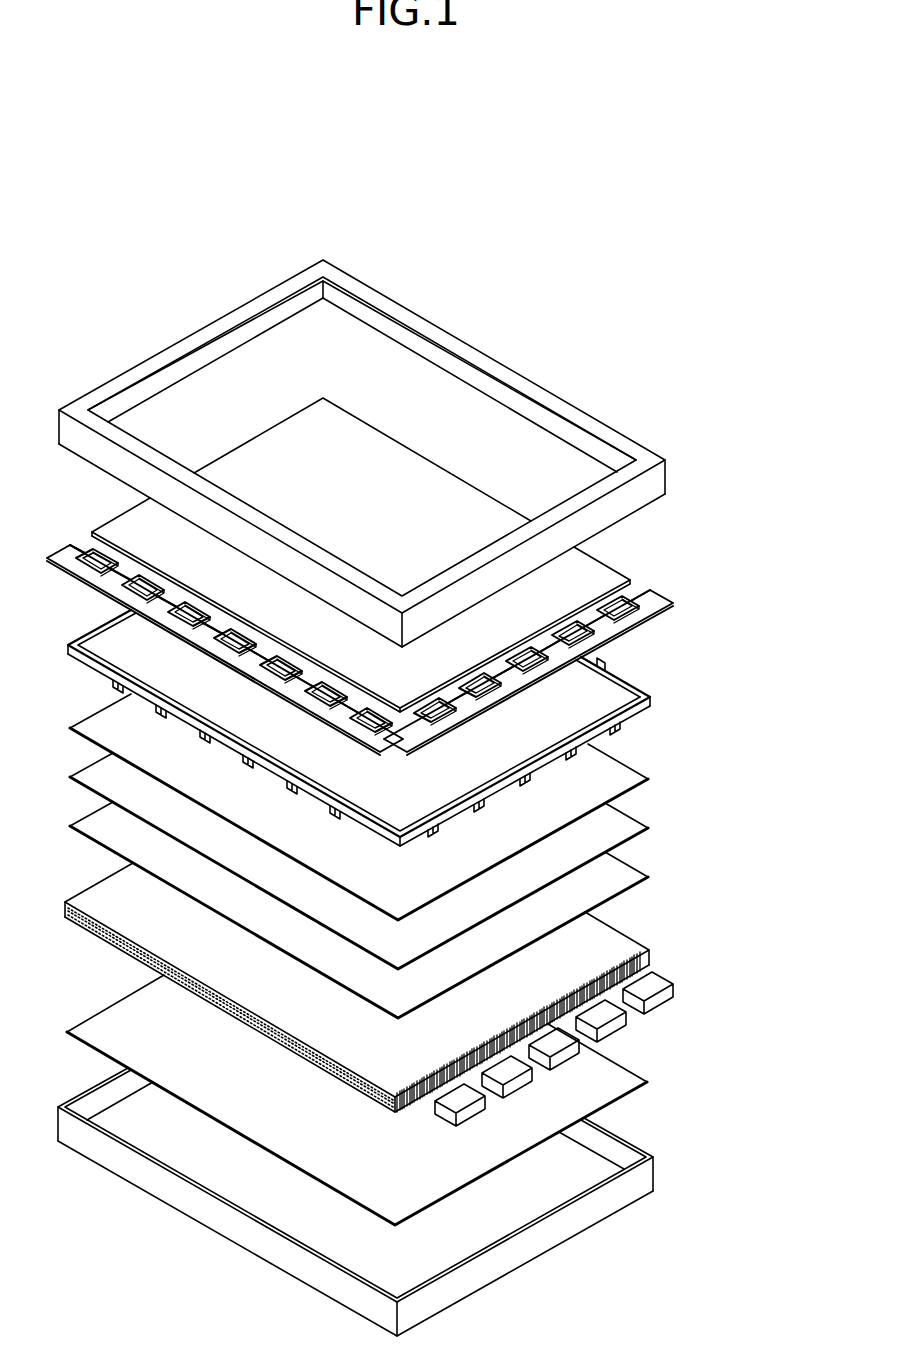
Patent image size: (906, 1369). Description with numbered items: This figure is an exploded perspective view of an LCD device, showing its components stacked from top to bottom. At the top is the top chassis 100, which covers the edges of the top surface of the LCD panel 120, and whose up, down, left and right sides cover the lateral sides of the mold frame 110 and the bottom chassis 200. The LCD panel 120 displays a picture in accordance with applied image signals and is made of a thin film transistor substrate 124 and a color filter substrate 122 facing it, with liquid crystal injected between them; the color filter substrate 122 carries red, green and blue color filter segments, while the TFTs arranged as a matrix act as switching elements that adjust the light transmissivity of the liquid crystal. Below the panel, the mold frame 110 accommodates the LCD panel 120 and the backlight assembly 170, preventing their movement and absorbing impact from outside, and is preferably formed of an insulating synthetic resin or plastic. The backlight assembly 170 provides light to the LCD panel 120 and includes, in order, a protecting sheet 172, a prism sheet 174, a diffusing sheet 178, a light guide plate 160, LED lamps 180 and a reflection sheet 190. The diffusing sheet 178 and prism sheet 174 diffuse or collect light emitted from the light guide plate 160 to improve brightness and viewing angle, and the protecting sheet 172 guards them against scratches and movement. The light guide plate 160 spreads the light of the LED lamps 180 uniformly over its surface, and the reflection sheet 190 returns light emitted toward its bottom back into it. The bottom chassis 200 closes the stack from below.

The top chassis 100 is at (666, 481).
The mold frame 110 is at (655, 699).
The LCD panel 120 is at (439, 626).
The color filter substrate 122 is at (594, 571).
The thin film transistor substrate 124 is at (648, 597).
The light guide plate 160 is at (646, 945).
The backlight assembly 170 is at (446, 917).
The protecting sheet 172 is at (627, 765).
The prism sheet 174 is at (627, 822).
The diffusing sheet 178 is at (627, 875).
The LED lamps 180 is at (599, 1049).
The reflection sheet 190 is at (629, 1074).
The bottom chassis 200 is at (641, 1170).